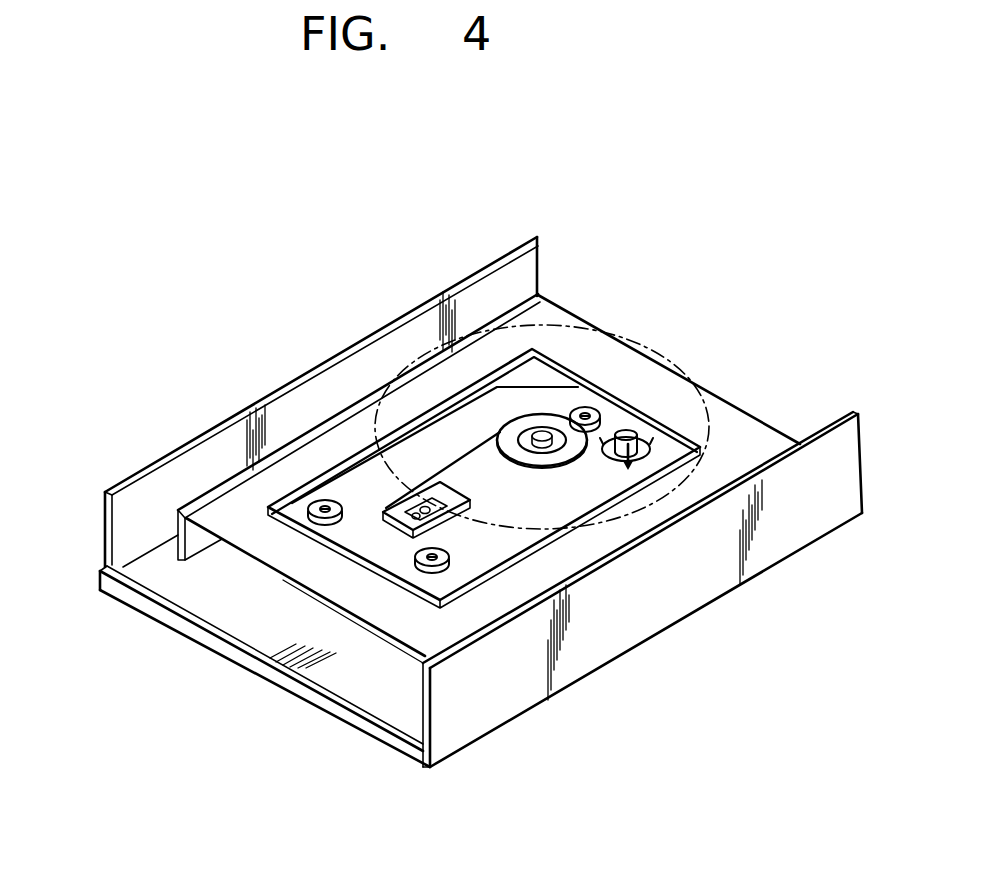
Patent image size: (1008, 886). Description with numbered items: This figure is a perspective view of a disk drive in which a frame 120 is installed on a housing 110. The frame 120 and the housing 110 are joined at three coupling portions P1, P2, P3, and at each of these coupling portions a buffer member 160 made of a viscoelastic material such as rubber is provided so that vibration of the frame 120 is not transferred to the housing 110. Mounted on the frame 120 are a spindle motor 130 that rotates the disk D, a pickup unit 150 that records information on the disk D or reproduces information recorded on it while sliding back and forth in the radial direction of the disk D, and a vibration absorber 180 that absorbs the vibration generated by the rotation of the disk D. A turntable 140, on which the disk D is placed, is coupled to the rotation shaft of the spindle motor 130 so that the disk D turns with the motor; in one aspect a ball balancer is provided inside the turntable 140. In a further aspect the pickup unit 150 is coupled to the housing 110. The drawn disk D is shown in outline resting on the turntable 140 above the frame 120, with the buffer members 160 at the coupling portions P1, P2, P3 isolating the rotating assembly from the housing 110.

The housing 110 is at (167, 455).
The frame 120 is at (553, 397).
The spindle motor 130 is at (478, 490).
The turntable 140 is at (542, 432).
The pickup unit 150 is at (406, 510).
The buffer member 160 is at (324, 498).
The vibration absorber 180 is at (660, 434).
The disk D is at (698, 428).
The coupling portion P1 is at (303, 490).
The coupling portion P2 is at (584, 396).
The coupling portion P3 is at (444, 573).